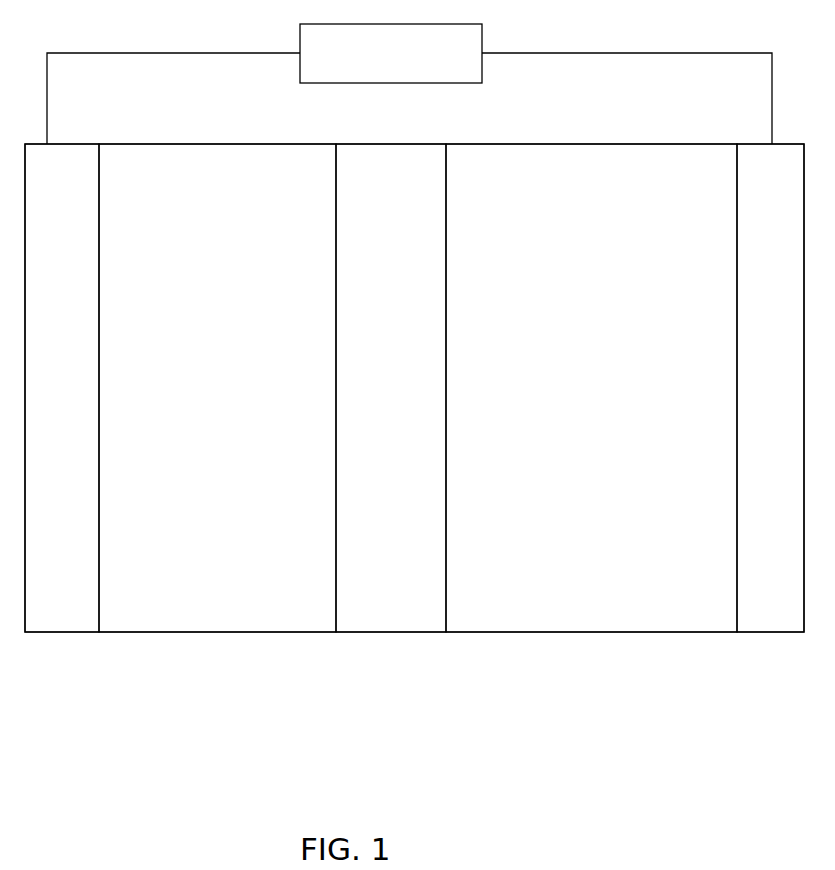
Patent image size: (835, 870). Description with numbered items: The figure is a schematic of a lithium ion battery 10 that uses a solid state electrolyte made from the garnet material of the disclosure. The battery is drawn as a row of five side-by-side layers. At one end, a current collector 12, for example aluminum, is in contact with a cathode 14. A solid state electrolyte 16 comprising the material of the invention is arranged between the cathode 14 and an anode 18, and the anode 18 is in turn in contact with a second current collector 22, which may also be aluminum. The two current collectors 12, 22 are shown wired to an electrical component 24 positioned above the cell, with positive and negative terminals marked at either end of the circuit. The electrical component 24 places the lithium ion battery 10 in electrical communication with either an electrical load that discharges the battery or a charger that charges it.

The lithium ion battery 10 is at (167, 665).
The current collector 12 is at (63, 600).
The cathode 14 is at (223, 603).
The solid state electrolyte 16 is at (404, 600).
The anode 18 is at (584, 608).
The current collector 22 is at (772, 607).
The electrical component 24 is at (455, 60).